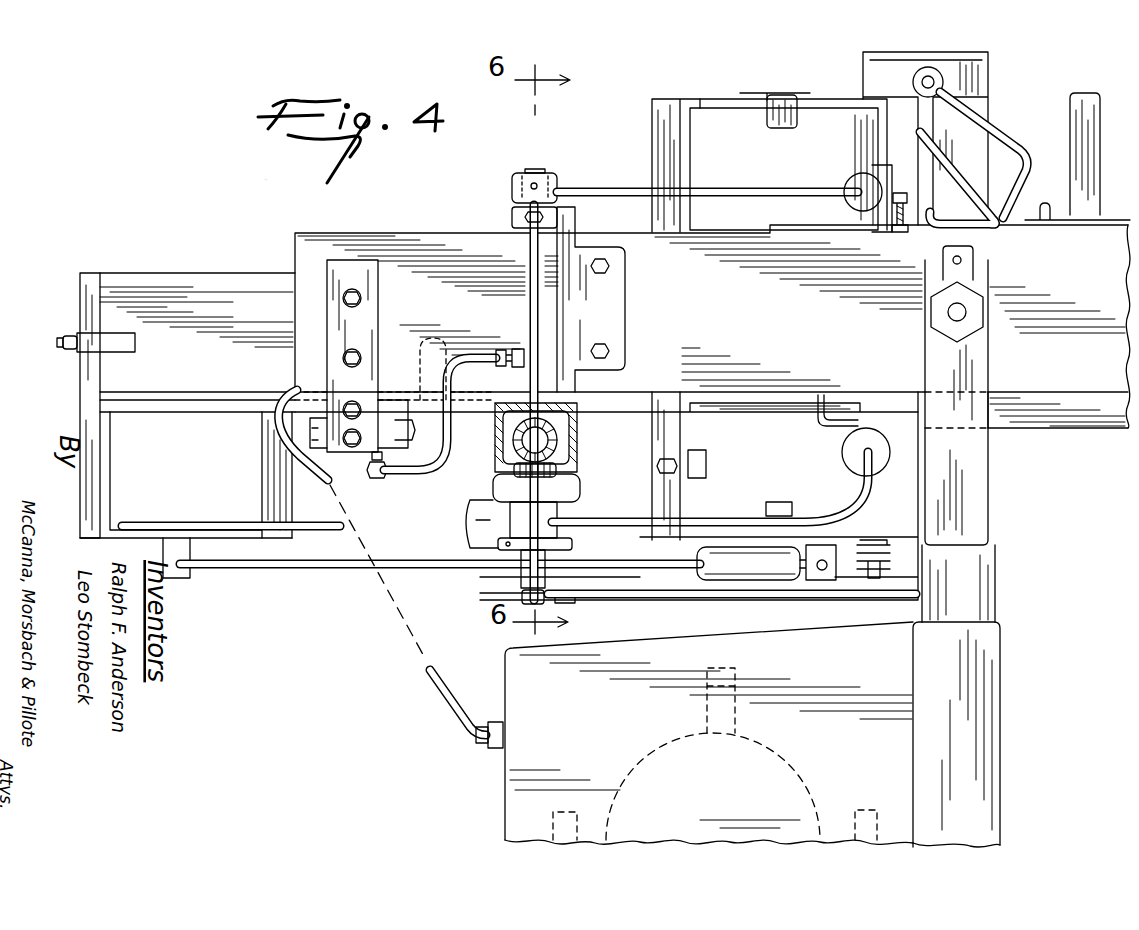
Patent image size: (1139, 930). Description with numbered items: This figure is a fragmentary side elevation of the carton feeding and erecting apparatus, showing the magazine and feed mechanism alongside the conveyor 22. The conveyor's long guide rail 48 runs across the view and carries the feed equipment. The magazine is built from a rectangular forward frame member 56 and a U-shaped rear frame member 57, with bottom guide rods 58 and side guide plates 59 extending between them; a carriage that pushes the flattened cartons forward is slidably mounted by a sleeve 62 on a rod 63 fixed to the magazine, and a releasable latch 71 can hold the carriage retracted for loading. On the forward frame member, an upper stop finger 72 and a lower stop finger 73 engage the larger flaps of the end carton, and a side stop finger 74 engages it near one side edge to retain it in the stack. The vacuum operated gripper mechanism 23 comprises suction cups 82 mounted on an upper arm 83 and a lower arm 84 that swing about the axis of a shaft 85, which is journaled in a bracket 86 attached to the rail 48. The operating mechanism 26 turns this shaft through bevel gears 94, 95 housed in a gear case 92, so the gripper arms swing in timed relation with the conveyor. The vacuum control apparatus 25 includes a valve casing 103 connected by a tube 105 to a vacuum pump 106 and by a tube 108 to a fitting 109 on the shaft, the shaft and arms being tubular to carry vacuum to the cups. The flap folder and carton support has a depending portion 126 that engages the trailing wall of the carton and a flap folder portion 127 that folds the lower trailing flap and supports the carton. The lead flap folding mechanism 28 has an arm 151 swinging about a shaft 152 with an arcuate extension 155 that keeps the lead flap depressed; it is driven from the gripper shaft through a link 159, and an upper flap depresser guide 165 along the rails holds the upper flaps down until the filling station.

The conveyor 22 is at (410, 226).
The vacuum operated gripper mechanism 23 is at (830, 180).
The vacuum control apparatus 25 is at (388, 376).
The operating mechanism 26 is at (472, 491).
The flap folding mechanism 28 is at (1022, 121).
The guide rail 48 is at (1046, 372).
The forward frame member 56 is at (702, 99).
The rear frame member 57 is at (80, 380).
The bottom guide rods 58 is at (318, 532).
The side guide plates 59 is at (200, 376).
The sleeve 62 is at (714, 567).
The rod 63 is at (268, 570).
The releasable latch 71 is at (128, 350).
The upper stop finger 72 is at (793, 101).
The lower stop finger 73 is at (777, 502).
The side stop finger 74 is at (878, 178).
The suction cups 82 is at (852, 201).
The upper arm 83 is at (714, 187).
The lower arm 84 is at (718, 518).
The shaft 85 is at (538, 173).
The bracket 86 is at (575, 305).
The gear case 92 is at (494, 450).
The bevel gear 94 is at (560, 440).
The bevel gear 95 is at (560, 466).
The valve casing 103 is at (325, 395).
The tube 105 is at (440, 690).
The vacuum pump 106 is at (676, 760).
The tube 108 is at (468, 352).
The fitting 109 is at (502, 366).
The depending portion 126 is at (815, 395).
The flap folder portion 127 is at (830, 428).
The arm 151 is at (1028, 152).
The shaft 152 is at (945, 82).
The arcuate extension 155 is at (1018, 190).
The link 159 is at (786, 592).
The upper flap depresser guide 165 is at (986, 167).